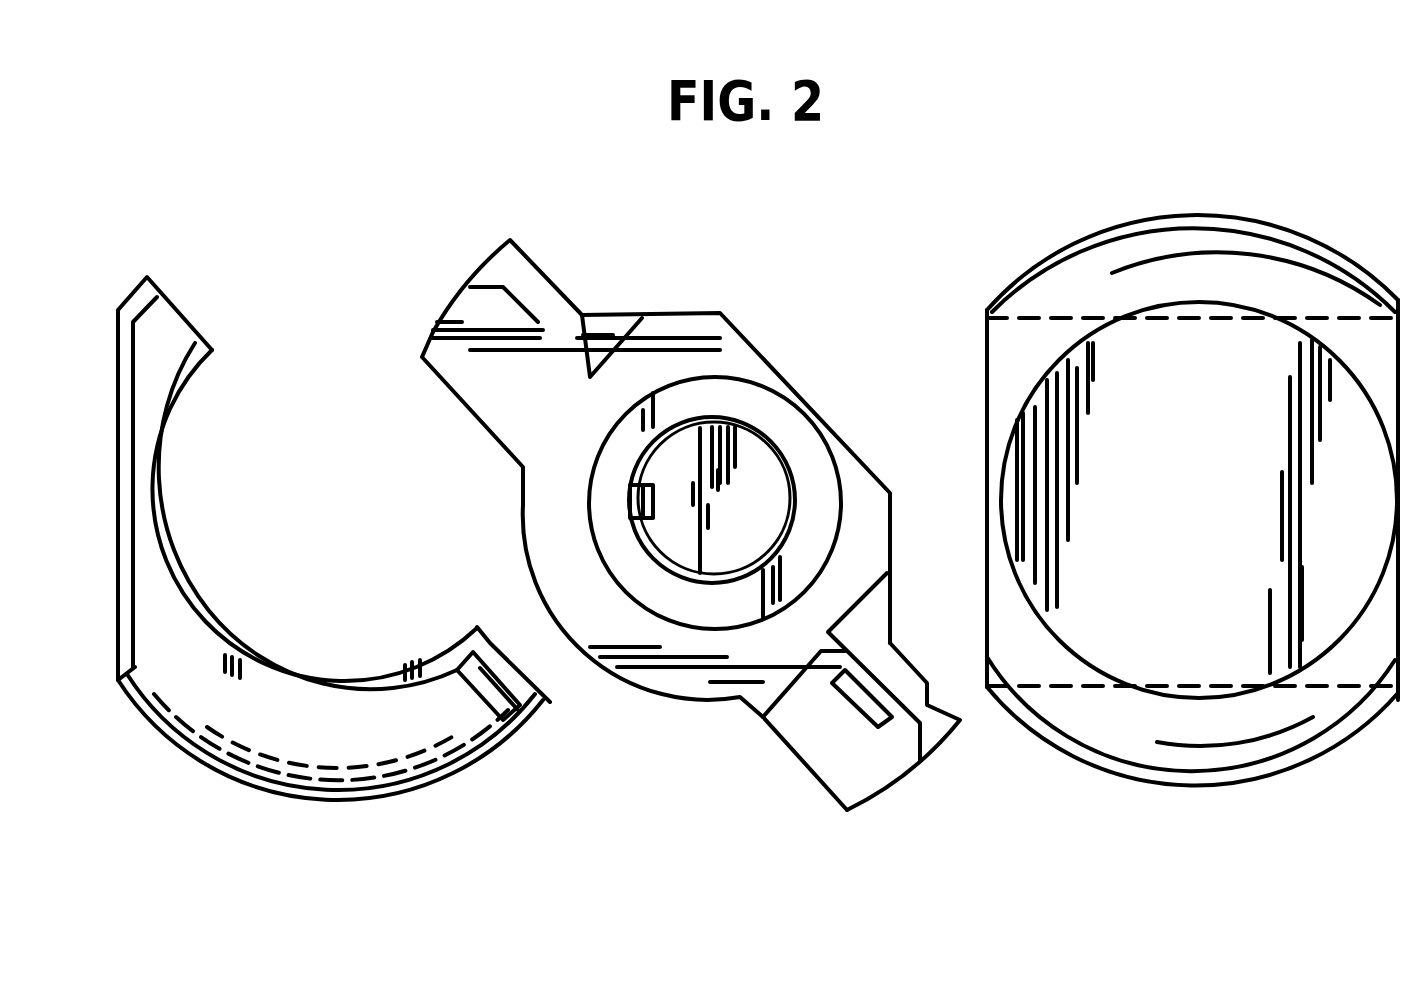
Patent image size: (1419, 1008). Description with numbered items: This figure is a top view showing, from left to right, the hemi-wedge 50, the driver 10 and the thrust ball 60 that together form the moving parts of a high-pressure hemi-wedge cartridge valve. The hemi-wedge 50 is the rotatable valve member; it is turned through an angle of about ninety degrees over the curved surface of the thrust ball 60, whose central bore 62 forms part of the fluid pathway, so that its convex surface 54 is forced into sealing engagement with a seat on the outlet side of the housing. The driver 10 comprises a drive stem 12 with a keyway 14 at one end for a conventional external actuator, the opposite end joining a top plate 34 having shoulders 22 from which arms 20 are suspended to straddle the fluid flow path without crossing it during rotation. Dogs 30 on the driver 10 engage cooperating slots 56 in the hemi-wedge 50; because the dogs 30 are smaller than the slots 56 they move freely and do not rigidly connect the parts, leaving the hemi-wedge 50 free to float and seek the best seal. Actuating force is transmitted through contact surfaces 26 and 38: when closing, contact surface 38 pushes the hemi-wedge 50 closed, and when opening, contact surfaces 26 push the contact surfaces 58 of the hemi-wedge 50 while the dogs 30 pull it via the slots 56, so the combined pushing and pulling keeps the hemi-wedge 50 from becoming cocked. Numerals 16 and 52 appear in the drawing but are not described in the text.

The driver 10 is at (747, 283).
The drive stem 12 is at (750, 457).
The keyway 14 is at (630, 497).
The annular wall 16 is at (808, 492).
The arms 20 is at (532, 280).
The shoulders 22 is at (425, 335).
The contact surfaces 26 is at (578, 315).
The dogs 30 is at (872, 703).
The top plate 34 is at (550, 540).
The contact surface 38 is at (715, 722).
The hemi-wedge 50 is at (192, 663).
The end portion 52 is at (150, 293).
The convex surface 54 is at (237, 780).
The slots 56 is at (483, 707).
The contact surfaces 58 is at (187, 322).
The thrust ball 60 is at (1252, 763).
The central bore 62 is at (1000, 316).